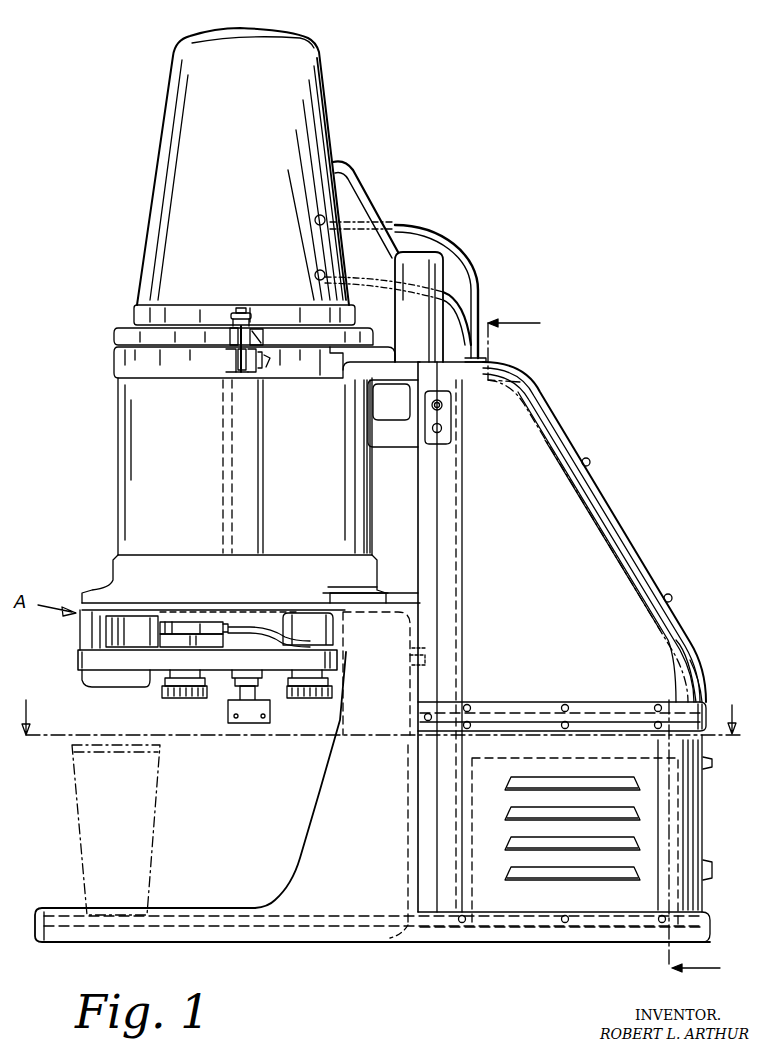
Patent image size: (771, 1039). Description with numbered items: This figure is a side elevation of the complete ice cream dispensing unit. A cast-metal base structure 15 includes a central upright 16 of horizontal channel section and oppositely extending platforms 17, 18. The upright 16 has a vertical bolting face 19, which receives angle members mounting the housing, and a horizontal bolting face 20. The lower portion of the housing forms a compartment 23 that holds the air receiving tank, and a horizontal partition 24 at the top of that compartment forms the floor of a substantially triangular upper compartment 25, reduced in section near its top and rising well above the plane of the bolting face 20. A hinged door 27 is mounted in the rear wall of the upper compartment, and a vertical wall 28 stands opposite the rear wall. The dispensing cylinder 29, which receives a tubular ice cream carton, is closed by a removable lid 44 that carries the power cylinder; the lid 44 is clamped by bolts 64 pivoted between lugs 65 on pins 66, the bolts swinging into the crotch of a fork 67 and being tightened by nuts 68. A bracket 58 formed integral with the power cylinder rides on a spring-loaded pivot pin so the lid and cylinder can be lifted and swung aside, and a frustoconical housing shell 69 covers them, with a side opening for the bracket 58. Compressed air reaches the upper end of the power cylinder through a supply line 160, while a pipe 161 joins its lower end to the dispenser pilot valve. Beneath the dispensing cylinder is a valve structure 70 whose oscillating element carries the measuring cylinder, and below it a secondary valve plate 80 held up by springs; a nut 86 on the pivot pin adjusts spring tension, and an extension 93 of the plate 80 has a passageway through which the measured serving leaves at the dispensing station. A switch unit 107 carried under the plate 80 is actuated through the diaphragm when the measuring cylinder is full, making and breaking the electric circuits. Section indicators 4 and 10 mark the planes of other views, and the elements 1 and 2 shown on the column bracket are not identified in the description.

The frustoconical housing shell 69 is at (298, 107).
The bracket 58 is at (358, 204).
The supply line 160 is at (432, 238).
The pipe 161 is at (468, 338).
The removable lid 44 is at (115, 333).
The nuts 68 is at (241, 310).
The fork 67 is at (258, 330).
The bolts 64 is at (236, 350).
The lugs 65 is at (240, 372).
The pins 66 is at (262, 368).
The dispensing cylinder 29 is at (140, 452).
The vertical wall 28 is at (420, 493).
The screw 1 is at (445, 405).
The screw 2 is at (446, 432).
The hinged door 27 is at (608, 503).
The upper compartment 25 is at (612, 580).
The horizontal partition 24 is at (708, 682).
The vertical bolting face 19 is at (416, 687).
The horizontal bolting face 20 is at (406, 611).
The valve structure 70 is at (66, 632).
The secondary valve plate 80 is at (70, 656).
The extension 93 is at (95, 680).
The nut 86 is at (205, 699).
The switch unit 107 is at (274, 718).
The central upright 16 is at (345, 790).
The platform 17 is at (190, 925).
The base structure 15 is at (368, 905).
The platform 18 is at (480, 932).
The compartment 23 is at (650, 850).
The section line 10- 10 is at (382, 705).
The section line 4- 4 is at (616, 650).